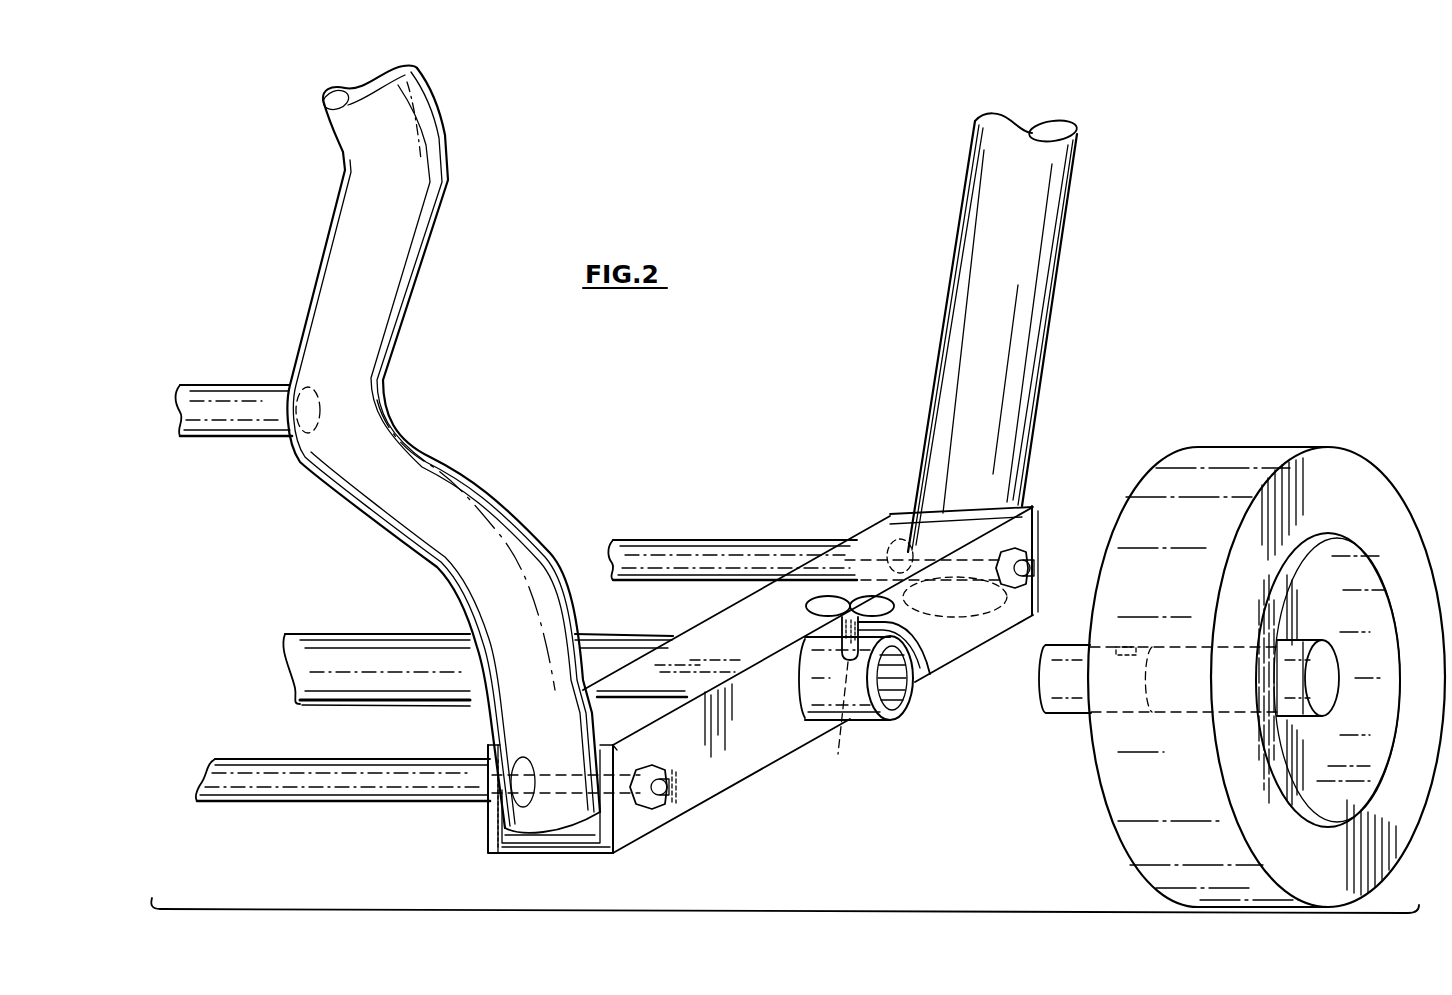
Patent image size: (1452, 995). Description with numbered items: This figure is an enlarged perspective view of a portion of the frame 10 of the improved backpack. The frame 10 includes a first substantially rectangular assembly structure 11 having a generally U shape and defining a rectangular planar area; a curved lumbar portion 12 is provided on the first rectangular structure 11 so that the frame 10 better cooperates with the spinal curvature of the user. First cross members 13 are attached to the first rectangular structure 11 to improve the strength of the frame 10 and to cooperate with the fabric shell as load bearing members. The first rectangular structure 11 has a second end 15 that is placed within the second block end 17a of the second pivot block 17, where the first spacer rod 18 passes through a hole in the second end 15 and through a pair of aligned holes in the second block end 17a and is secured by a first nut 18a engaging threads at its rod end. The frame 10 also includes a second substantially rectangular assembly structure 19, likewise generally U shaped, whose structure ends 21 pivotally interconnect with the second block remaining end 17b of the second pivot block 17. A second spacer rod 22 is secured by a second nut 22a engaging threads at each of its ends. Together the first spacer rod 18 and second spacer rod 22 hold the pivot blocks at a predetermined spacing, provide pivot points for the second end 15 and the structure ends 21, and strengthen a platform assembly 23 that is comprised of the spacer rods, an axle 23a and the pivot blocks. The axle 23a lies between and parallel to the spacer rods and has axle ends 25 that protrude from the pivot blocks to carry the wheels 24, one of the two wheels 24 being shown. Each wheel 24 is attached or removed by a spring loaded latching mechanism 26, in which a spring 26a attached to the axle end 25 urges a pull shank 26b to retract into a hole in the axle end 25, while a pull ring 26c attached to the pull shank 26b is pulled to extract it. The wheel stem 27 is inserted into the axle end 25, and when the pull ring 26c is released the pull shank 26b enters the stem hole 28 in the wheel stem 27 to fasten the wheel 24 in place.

The frame 10 is at (1185, 252).
The first substantially rectangular assembly structure 11 is at (343, 172).
The lumbar portion 12 is at (297, 468).
The first cross members 13 is at (193, 438).
The second end 15 is at (562, 820).
The second pivot block 17 is at (663, 820).
The second block end 17a is at (520, 837).
The second block remaining end 17b is at (896, 540).
The first spacer rod 18 is at (313, 797).
The first nut 18a is at (663, 768).
The second substantially rectangular assembly structure 19 is at (1078, 157).
The structure ends 21 is at (1024, 478).
The second spacer rod 22 is at (611, 552).
The second nut 22a is at (1028, 531).
The platform assembly 23 is at (262, 832).
The axle 23a is at (285, 641).
The wheels 24 is at (1264, 420).
The axle ends 25 is at (908, 714).
The spring loaded latching mechanism 26 is at (935, 643).
The spring 26a is at (914, 680).
The pull shank 26b is at (865, 723).
The pull ring 26c is at (817, 597).
The wheel stem 27 is at (1070, 716).
The stem hole 28 is at (1128, 647).